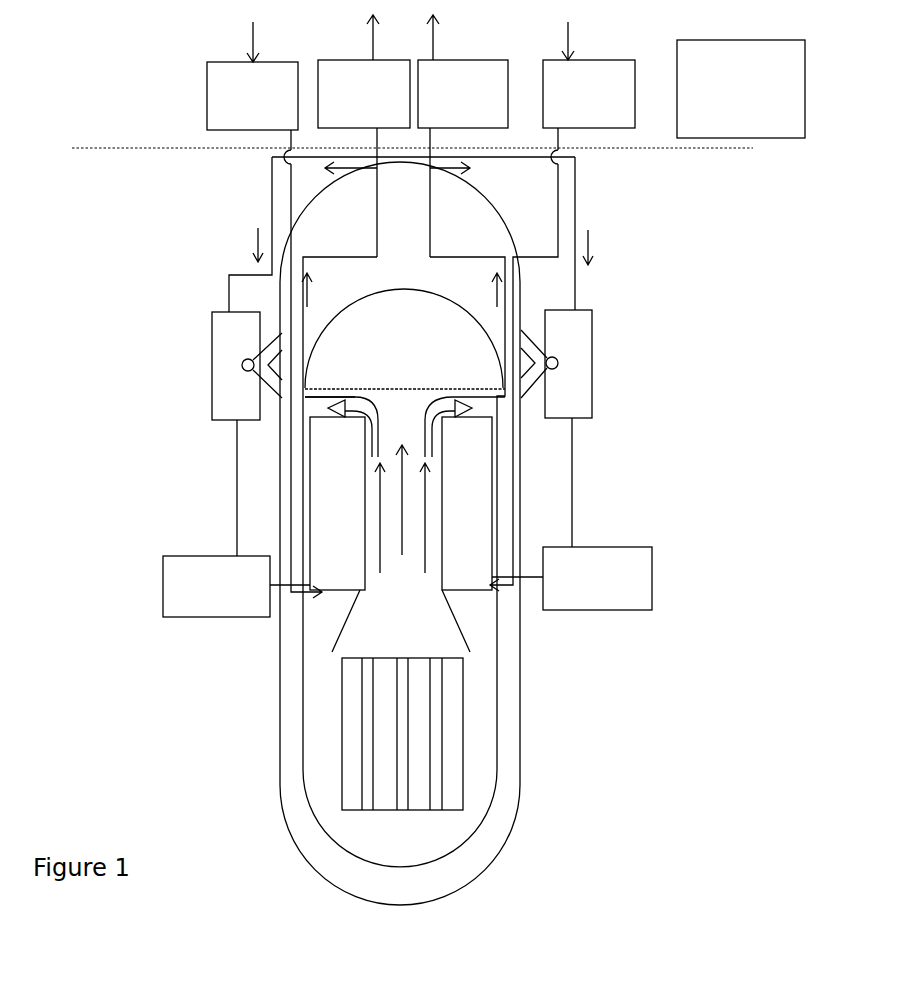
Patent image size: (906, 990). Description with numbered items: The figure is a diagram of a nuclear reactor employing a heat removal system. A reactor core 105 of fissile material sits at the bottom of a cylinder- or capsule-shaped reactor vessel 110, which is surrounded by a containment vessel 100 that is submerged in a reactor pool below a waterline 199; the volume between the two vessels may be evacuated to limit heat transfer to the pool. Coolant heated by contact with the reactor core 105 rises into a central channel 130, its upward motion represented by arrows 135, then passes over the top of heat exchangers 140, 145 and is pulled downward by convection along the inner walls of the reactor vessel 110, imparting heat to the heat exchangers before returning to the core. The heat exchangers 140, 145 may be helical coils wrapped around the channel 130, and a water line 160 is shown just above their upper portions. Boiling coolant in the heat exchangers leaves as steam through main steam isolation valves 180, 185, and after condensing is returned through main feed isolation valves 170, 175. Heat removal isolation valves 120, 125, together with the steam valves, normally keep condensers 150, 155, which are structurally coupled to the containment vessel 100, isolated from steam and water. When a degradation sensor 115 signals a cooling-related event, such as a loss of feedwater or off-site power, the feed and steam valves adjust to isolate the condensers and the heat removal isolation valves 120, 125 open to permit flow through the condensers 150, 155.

The containment vessel 100 is at (508, 842).
The reactor core 105 is at (342, 750).
The reactor vessel 110 is at (497, 762).
The degradation sensor 115 is at (741, 89).
The heat removal isolation valve 120 is at (236, 518).
The heat removal isolation valve 125 is at (572, 514).
The channel 130 is at (401, 621).
The arrows 135 is at (407, 493).
The heat exchanger 140 is at (340, 597).
The heat exchanger 145 is at (465, 600).
The condenser 150 is at (213, 403).
The condenser 155 is at (593, 378).
The water line 160 is at (377, 382).
The main feed isolation valve 170 is at (264, 310).
The main feed isolation valve 175 is at (562, 306).
The main steam isolation valve 180 is at (364, 136).
The main steam isolation valve 185 is at (463, 136).
The waterline 199 is at (135, 147).